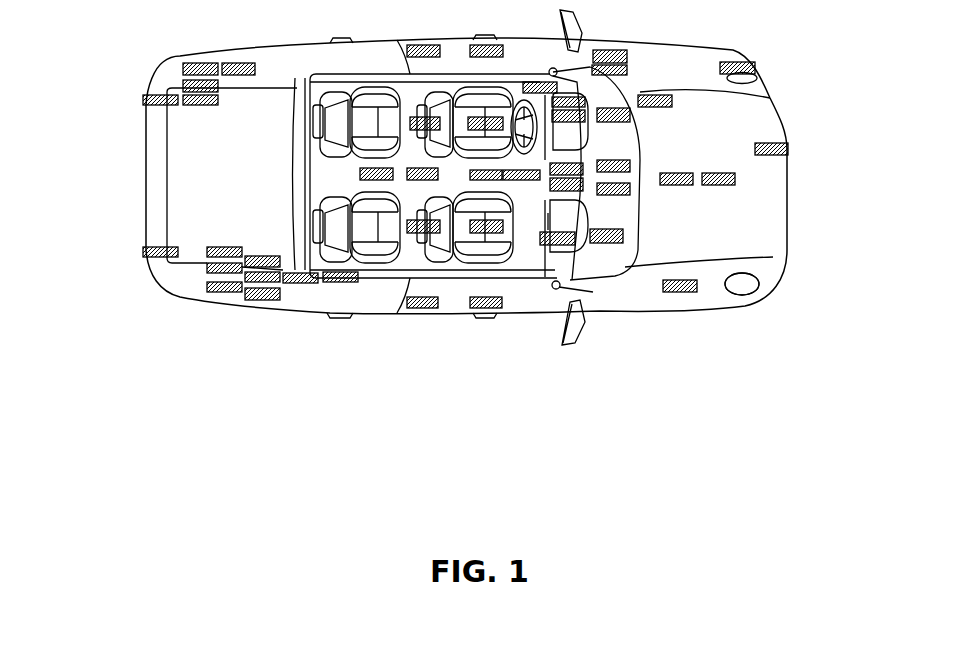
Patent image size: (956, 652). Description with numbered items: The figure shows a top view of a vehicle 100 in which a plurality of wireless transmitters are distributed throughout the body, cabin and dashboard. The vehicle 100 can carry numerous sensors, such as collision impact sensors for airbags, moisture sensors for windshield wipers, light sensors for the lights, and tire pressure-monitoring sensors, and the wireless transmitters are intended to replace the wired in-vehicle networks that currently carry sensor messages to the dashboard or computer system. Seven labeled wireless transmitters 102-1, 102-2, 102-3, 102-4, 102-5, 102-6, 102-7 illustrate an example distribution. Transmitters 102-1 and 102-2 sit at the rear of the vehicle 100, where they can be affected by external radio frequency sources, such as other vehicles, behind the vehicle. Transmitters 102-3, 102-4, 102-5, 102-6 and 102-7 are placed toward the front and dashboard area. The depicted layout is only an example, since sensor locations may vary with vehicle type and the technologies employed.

The vehicle 100 is at (233, 370).
The wireless transmitter 102-1 is at (145, 249).
The wireless transmitter 102-2 is at (143, 100).
The wireless transmitter 102-3 is at (620, 237).
The wireless transmitter 102-4 is at (624, 60).
The wireless transmitter 102-5 is at (752, 68).
The wireless transmitter 102-6 is at (628, 163).
The wireless transmitter 102-7 is at (752, 282).